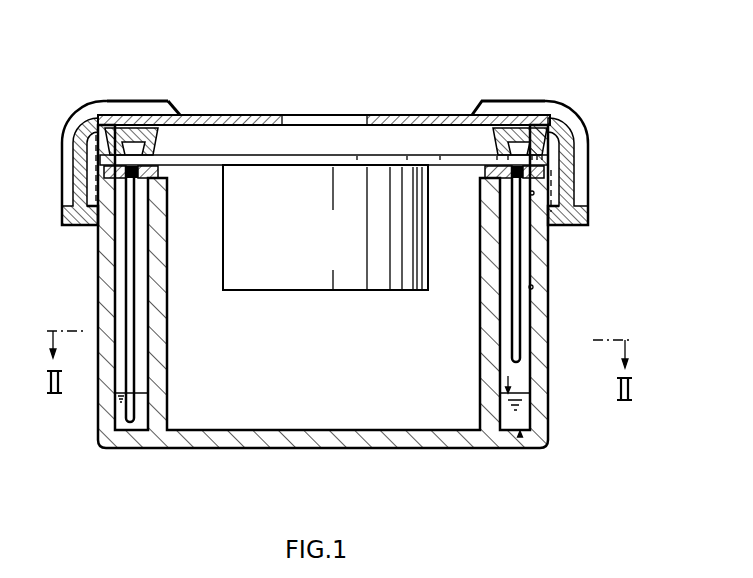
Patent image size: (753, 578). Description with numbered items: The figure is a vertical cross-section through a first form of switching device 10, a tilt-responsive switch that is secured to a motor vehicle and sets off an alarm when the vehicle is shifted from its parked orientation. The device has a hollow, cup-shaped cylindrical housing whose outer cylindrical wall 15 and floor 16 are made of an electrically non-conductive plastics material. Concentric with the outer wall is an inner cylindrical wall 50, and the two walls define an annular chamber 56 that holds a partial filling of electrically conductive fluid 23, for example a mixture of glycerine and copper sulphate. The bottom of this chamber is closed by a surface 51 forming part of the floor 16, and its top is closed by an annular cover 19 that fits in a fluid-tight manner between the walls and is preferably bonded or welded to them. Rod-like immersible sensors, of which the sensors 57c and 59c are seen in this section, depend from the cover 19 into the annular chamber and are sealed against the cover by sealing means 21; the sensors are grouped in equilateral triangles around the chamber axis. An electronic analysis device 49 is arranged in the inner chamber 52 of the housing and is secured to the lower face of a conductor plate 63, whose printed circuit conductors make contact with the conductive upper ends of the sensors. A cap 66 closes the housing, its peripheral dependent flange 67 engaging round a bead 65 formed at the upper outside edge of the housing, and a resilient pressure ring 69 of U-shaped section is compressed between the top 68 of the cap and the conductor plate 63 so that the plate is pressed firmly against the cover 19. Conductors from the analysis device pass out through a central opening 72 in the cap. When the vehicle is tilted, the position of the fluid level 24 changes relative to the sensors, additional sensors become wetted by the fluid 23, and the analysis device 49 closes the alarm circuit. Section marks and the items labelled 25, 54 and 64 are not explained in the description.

The switching device 10 is at (598, 73).
The cylindrical wall 15 is at (335, 286).
The floor 16 is at (507, 450).
The annular cover 19 is at (541, 172).
The sealing means 21 is at (552, 162).
The electrically-conductive fluid 23 is at (528, 420).
The fluid level 24 is at (524, 392).
The opening 25 is at (534, 287).
The electronic analysis device 49 is at (325, 182).
The inner cylindrical wall 50 is at (482, 373).
The surface 51 is at (520, 437).
The inner chamber 52 is at (363, 387).
The retaining block 54 is at (544, 181).
The annular chamber 56 is at (527, 236).
The immersible sensor 57c is at (131, 318).
The immersible sensor 59c is at (516, 319).
The conductor plate 63 is at (410, 163).
The cap 64 is at (301, 138).
The bead 65 is at (99, 217).
The cap 66 is at (324, 70).
The peripheral dependent flange 67 is at (62, 214).
The top of the cap 68 is at (182, 115).
The pressure ring 69 is at (116, 114).
The central opening 72 is at (366, 118).